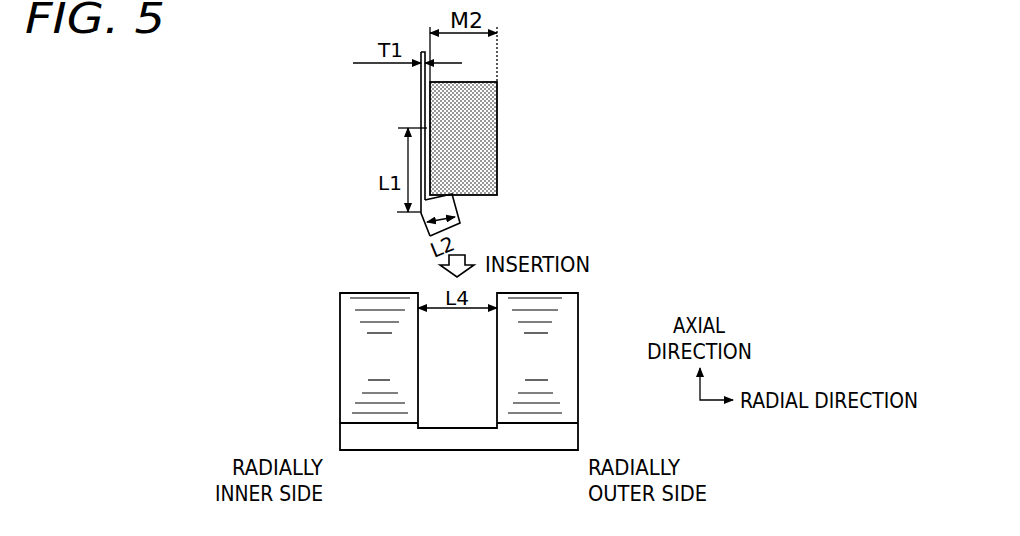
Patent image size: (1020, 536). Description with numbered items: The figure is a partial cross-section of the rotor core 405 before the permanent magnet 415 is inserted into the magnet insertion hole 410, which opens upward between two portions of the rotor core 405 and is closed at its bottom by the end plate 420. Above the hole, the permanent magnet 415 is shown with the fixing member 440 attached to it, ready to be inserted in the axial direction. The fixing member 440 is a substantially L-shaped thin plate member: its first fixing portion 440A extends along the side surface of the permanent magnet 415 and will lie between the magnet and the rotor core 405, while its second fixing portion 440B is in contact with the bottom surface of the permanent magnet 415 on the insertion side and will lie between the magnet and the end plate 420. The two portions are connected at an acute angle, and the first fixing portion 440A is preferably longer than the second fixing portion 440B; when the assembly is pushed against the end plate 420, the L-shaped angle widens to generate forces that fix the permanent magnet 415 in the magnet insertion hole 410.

The rotor core 405 is at (340, 320).
The magnet insertion hole 410 is at (437, 365).
The permanent magnet 415 is at (497, 127).
The end plate 420 is at (578, 428).
The fixing member 440 is at (442, 157).
The first fixing portion 440A is at (421, 161).
The second fixing portion 440B is at (423, 215).